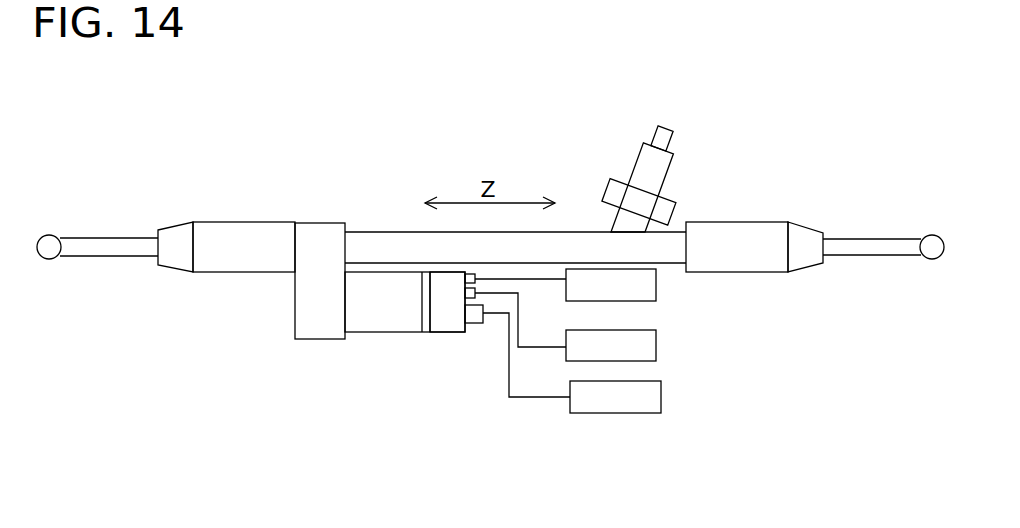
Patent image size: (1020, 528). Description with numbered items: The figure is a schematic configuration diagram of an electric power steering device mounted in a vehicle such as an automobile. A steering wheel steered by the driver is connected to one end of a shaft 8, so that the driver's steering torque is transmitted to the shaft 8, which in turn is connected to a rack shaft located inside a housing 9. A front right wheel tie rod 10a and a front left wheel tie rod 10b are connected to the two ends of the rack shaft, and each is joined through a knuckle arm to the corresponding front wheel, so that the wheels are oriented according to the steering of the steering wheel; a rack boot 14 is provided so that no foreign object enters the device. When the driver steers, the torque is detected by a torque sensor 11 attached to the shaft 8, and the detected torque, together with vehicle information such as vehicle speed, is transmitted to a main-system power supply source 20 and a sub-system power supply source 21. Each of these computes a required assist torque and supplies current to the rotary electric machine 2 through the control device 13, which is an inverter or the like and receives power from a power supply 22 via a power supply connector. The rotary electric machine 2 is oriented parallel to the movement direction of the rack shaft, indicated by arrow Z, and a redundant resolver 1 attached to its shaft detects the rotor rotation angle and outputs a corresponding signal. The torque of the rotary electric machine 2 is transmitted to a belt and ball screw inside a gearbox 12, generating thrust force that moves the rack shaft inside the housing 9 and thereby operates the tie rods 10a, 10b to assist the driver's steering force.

The redundant resolver 1 is at (427, 330).
The rotary electric machine 2 is at (383, 312).
The shaft 8 is at (672, 130).
The housing 9 is at (362, 248).
The front right wheel tie rod 10a is at (857, 247).
The front left wheel tie rod 10b is at (112, 248).
The torque sensor 11 is at (613, 180).
The gearbox 12 is at (323, 238).
The control device 13 is at (442, 312).
The rack boot 14 is at (207, 227).
The main-system power supply source 20 is at (656, 283).
The sub-system power supply source 21 is at (656, 345).
The power supply 22 is at (661, 397).